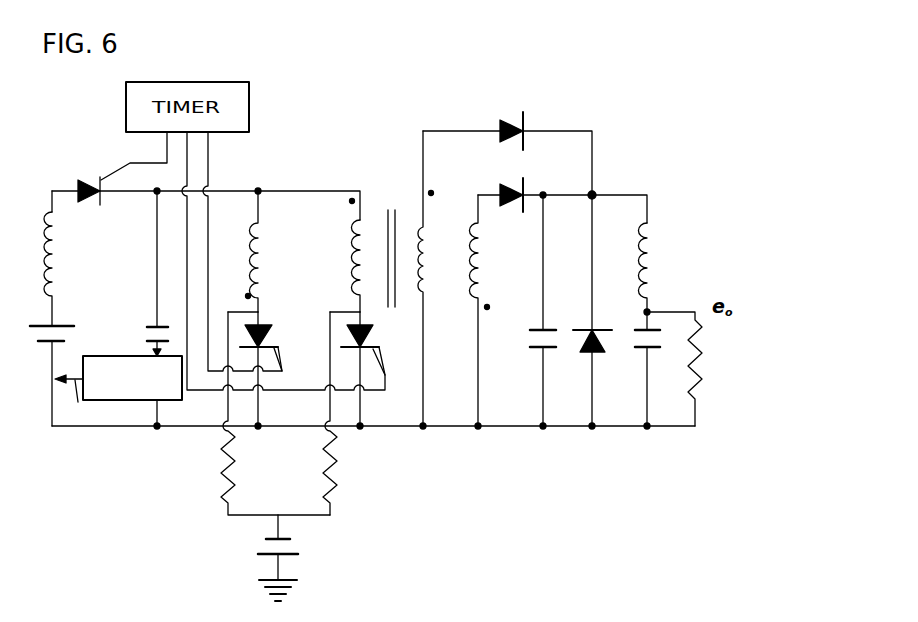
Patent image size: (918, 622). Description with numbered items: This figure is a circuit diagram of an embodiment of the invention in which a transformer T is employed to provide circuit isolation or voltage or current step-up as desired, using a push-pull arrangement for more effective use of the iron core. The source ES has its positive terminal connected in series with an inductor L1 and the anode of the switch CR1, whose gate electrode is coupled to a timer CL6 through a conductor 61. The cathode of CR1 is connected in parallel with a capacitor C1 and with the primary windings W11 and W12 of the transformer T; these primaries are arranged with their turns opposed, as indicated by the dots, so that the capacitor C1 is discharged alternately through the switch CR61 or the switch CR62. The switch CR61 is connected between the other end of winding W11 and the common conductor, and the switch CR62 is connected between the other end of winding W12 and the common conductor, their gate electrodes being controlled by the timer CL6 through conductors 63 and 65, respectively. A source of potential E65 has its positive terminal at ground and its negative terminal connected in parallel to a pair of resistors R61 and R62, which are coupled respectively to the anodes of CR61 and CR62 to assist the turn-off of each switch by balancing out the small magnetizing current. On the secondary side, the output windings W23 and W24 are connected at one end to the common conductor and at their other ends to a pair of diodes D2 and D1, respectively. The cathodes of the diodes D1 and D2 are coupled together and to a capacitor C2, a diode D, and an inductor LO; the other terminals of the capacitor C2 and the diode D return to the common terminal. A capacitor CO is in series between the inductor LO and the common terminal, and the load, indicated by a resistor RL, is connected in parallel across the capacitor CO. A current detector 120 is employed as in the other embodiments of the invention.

The conductor 61 is at (145, 164).
The conductor 63 is at (209, 166).
The conductor 65 is at (187, 176).
The current detector 120 is at (130, 400).
The timer CL6 is at (249, 103).
The controlled rectifier switch CR1 is at (86, 174).
The inductor L1 is at (44, 266).
The source ES is at (42, 334).
The capacitor C1 is at (150, 332).
The primary winding W11 is at (268, 278).
The primary winding W12 is at (358, 228).
The switch CR61 is at (272, 334).
The switch CR62 is at (366, 330).
The resistor R61 is at (242, 462).
The resistor R62 is at (344, 462).
The source of potential E65 is at (292, 545).
The transformer T is at (389, 246).
The secondary winding W23 is at (434, 272).
The secondary winding W24 is at (496, 312).
The diode D1 is at (514, 182).
The diode D2 is at (514, 118).
The capacitor C2 is at (536, 336).
The diode D is at (592, 330).
The inductor LO is at (656, 284).
The capacitor CO is at (640, 330).
The load resistor RL is at (708, 355).